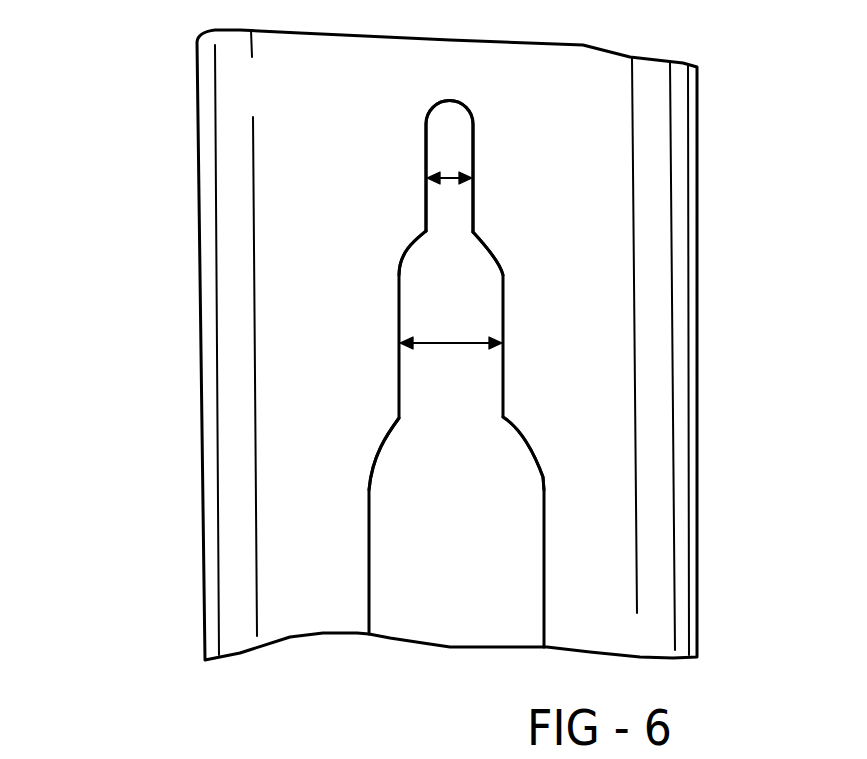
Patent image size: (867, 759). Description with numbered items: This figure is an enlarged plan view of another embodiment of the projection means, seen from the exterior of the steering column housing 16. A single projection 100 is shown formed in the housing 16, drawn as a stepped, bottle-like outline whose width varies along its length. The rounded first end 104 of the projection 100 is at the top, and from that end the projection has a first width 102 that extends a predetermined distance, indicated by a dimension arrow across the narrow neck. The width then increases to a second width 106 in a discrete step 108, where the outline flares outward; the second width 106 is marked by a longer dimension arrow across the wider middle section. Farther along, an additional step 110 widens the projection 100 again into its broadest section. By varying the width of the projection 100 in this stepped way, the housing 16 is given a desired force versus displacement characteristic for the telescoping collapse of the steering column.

The steering column housing 16 is at (190, 320).
The projection 100 is at (332, 126).
The first width 102 is at (448, 172).
The rounded neck top 104 is at (428, 122).
The second width 106 is at (445, 342).
The discrete step 108 is at (476, 233).
The additional step 110 is at (522, 430).